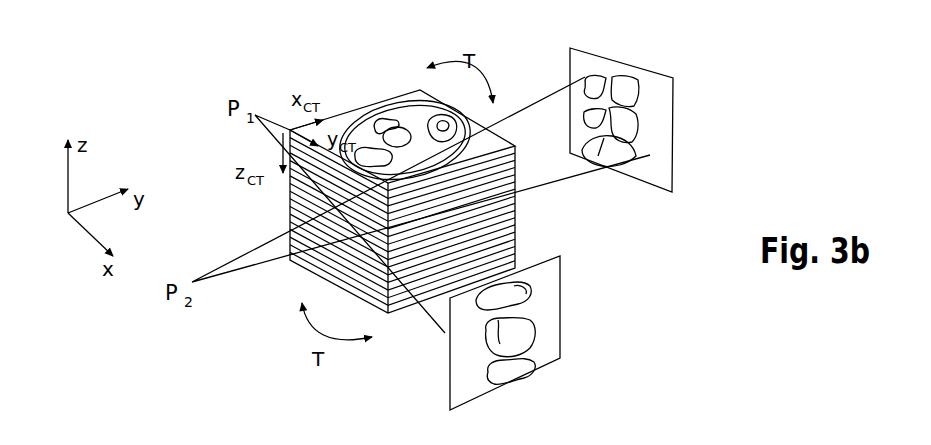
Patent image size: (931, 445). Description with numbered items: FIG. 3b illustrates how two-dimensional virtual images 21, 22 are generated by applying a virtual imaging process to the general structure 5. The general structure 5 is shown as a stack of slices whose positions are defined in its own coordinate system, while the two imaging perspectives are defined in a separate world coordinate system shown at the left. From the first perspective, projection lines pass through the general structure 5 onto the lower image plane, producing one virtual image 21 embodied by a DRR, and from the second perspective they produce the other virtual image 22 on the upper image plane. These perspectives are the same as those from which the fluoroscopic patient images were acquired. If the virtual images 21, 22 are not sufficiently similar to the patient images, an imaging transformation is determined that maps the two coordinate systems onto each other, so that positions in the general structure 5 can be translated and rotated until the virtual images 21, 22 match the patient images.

The general structure 5 is at (385, 103).
The two-dimensional virtual image 21 is at (563, 315).
The two-dimensional virtual image 22 is at (651, 71).